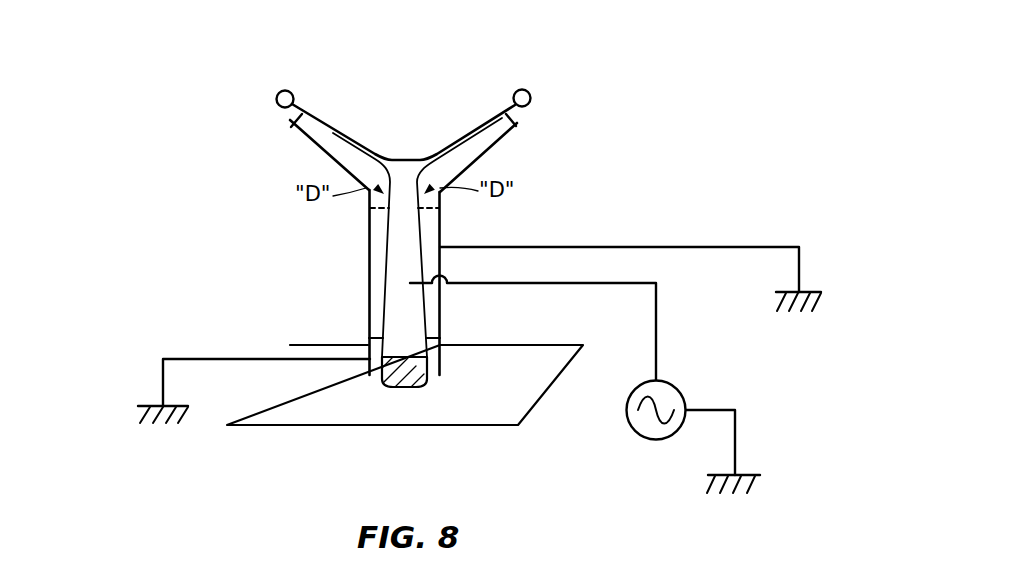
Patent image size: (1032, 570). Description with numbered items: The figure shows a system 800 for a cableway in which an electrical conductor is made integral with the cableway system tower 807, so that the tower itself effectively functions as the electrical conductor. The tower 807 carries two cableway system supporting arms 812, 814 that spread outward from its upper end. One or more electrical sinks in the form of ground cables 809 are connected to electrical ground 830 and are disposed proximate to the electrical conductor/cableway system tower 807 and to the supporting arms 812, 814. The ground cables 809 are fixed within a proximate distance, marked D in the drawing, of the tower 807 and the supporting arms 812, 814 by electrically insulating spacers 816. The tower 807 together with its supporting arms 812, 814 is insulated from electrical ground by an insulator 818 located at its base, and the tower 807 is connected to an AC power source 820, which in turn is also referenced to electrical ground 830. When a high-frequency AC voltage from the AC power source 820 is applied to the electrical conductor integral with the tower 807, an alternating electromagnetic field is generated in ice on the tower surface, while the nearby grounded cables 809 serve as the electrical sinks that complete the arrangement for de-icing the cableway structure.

The system 800 is at (208, 77).
The cableway system tower 807 is at (413, 160).
The ground cables 809 is at (369, 236).
The cableway system supporting arm 812 is at (322, 114).
The cableway system supporting arm 814 is at (474, 115).
The electrically insulating spacer 816 is at (529, 109).
The insulator 818 is at (393, 388).
The AC power source 820 is at (642, 435).
The electrical ground 830 is at (146, 404).